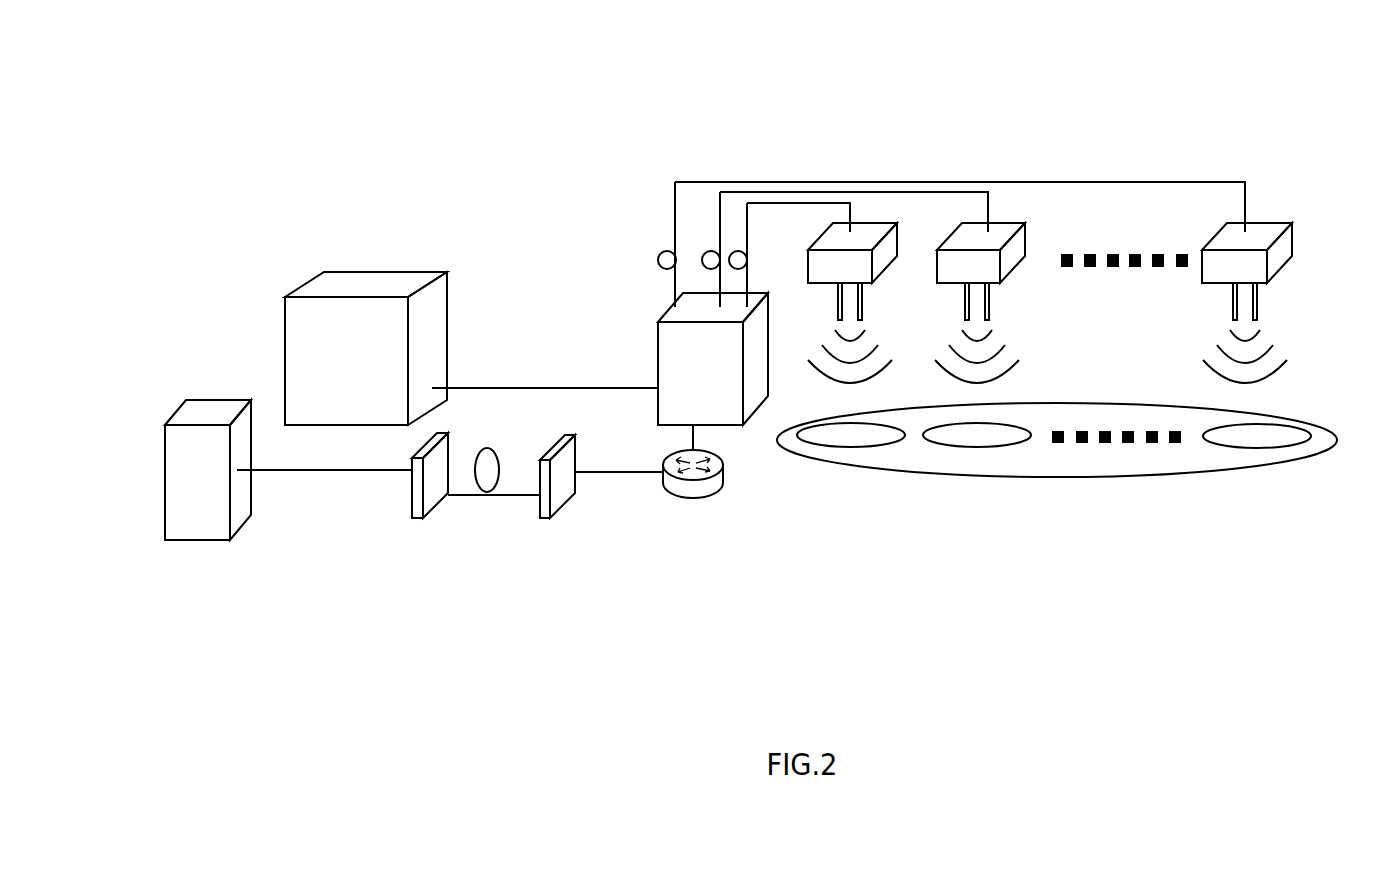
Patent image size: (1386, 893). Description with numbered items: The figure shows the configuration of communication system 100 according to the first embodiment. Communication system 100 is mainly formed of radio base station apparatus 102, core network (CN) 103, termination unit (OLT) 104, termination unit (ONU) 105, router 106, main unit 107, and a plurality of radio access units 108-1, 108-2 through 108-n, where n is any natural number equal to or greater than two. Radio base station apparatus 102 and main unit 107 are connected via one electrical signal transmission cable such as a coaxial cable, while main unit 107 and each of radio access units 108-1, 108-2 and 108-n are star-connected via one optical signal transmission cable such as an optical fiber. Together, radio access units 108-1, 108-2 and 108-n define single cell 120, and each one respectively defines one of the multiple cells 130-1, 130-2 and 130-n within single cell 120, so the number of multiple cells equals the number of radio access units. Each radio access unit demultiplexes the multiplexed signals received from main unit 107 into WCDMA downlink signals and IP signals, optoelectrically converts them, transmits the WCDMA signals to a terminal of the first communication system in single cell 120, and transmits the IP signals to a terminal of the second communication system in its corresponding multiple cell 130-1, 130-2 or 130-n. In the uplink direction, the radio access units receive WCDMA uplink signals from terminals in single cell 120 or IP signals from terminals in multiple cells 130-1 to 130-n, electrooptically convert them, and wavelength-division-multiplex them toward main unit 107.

The communication system 100 is at (717, 63).
The radio base station apparatus 102 is at (402, 268).
The core network (CN) 103 is at (212, 402).
The termination unit (OLT) 104 is at (437, 498).
The termination unit (ONU) 105 is at (565, 498).
The router 106 is at (692, 492).
The main unit 107 is at (658, 342).
The radio access unit 108-1 is at (895, 238).
The radio access unit 108-2 is at (1024, 240).
The radio access unit 108-n is at (1294, 241).
The single cell 120 is at (1115, 478).
The multiple cell 130-1 is at (853, 447).
The multiple cell 130-2 is at (968, 447).
The multiple cell 130-n is at (1255, 448).